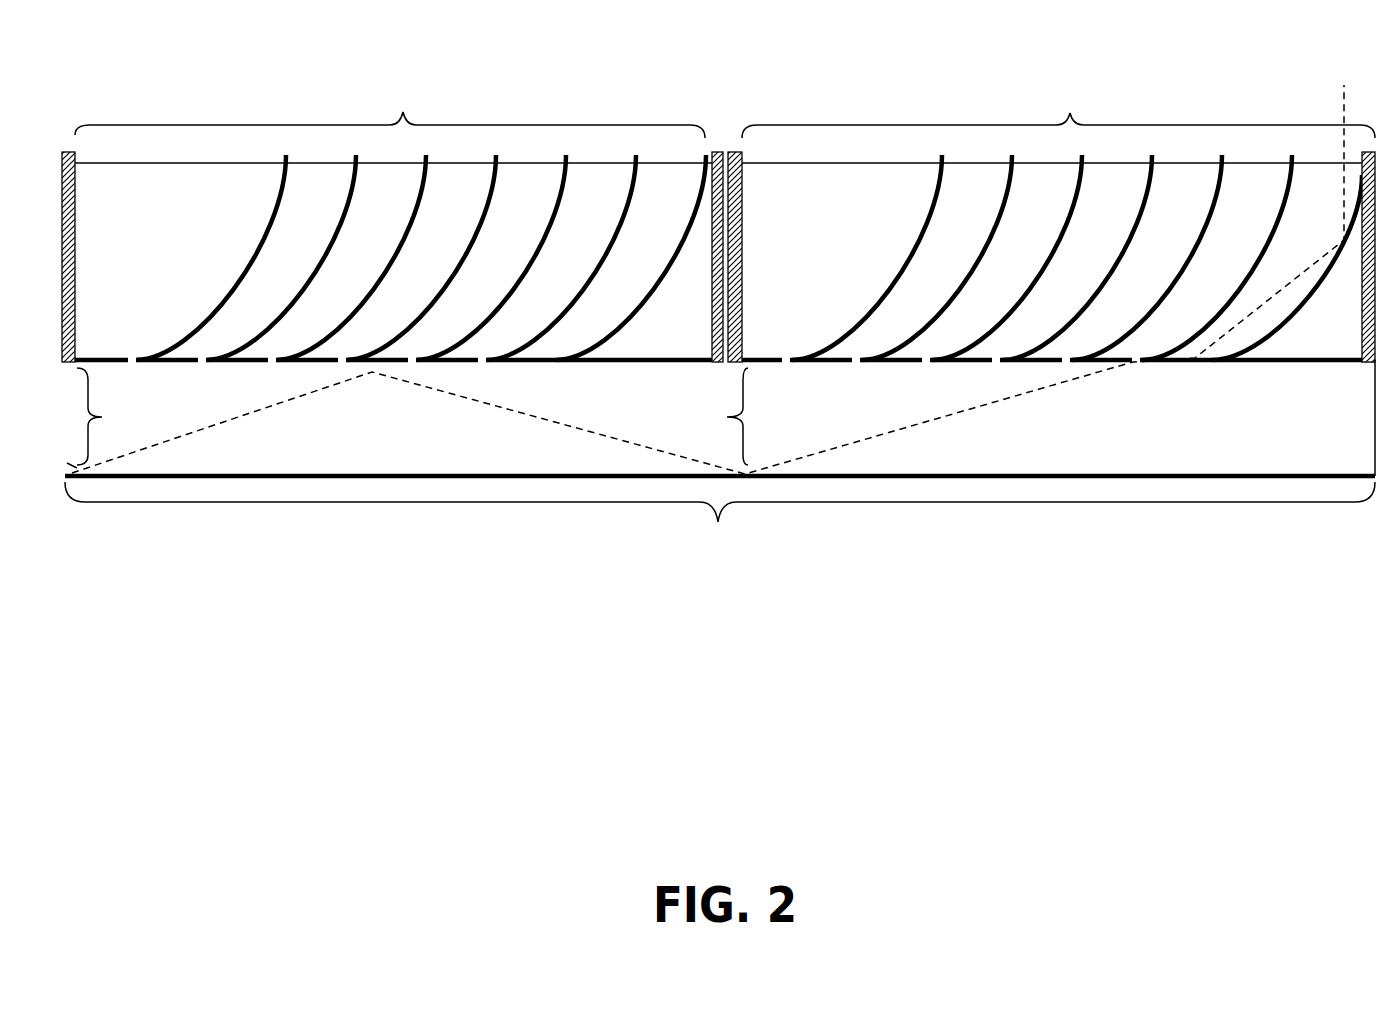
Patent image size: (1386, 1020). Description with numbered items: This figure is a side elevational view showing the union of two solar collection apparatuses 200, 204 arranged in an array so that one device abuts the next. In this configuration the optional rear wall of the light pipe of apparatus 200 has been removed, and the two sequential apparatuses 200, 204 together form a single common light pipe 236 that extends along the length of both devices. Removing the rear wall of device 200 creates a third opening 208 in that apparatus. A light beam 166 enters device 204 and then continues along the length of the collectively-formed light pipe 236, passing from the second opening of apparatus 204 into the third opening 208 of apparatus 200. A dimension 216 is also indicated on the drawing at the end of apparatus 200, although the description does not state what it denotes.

The solar collection apparatus 200 is at (392, 214).
The solar collection apparatus 204 is at (1051, 219).
The light beam 166 is at (1332, 94).
The first gap distance 216 is at (123, 416).
The third opening 208 is at (700, 416).
The common light pipe 236 is at (720, 466).